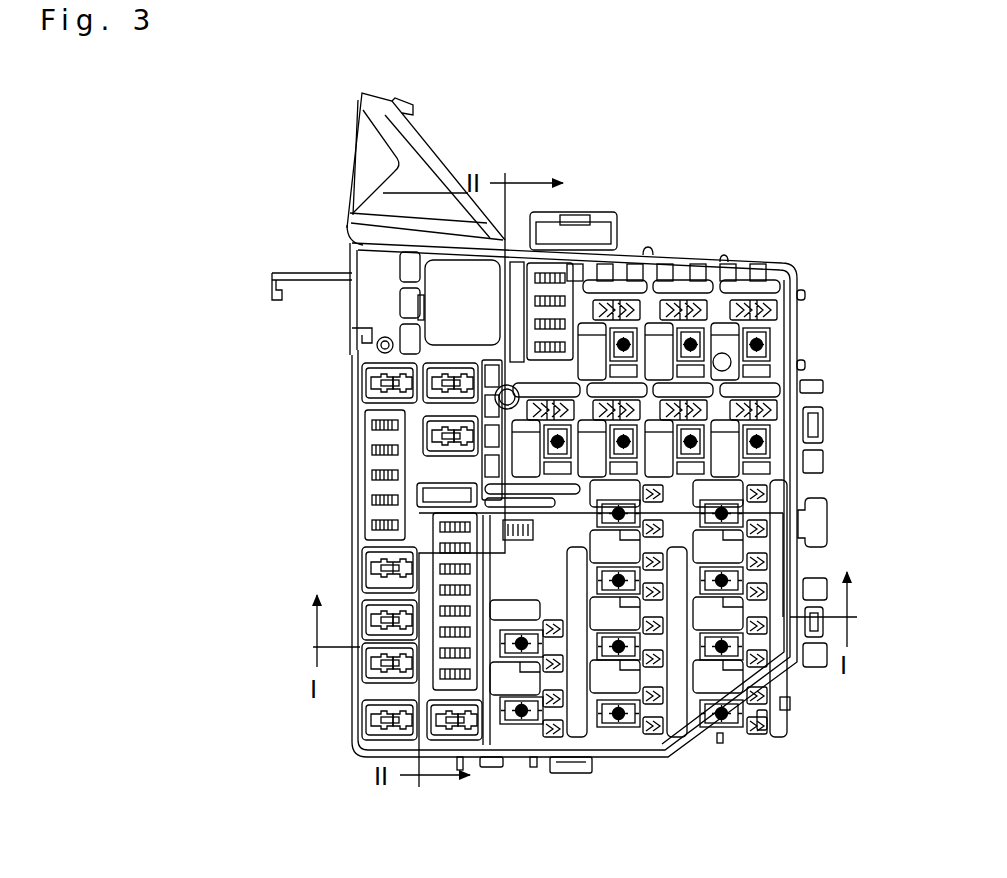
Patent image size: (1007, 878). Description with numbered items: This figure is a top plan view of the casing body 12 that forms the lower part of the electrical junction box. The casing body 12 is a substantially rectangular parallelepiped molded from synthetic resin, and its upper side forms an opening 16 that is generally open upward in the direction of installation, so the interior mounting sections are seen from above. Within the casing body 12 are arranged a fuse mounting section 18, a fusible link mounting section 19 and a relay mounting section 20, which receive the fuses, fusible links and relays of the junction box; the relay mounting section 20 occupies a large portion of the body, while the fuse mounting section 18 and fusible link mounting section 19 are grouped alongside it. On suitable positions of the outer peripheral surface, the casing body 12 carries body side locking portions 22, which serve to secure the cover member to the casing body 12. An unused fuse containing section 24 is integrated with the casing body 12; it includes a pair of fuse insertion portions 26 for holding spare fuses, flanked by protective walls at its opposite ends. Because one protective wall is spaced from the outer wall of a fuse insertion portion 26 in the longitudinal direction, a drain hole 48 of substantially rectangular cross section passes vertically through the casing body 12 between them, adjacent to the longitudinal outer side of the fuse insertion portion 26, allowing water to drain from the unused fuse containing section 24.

The casing body 12 is at (822, 235).
The opening 16 is at (697, 292).
The fuse mounting section 18 is at (550, 318).
The fusible link mounting section 19 is at (387, 373).
The relay mounting section 20 is at (773, 333).
The body side locking portion 22 is at (600, 204).
The unused fuse containing section 24 is at (517, 470).
The fuse insertion portion 26 is at (493, 483).
The drain hole 48 is at (478, 540).